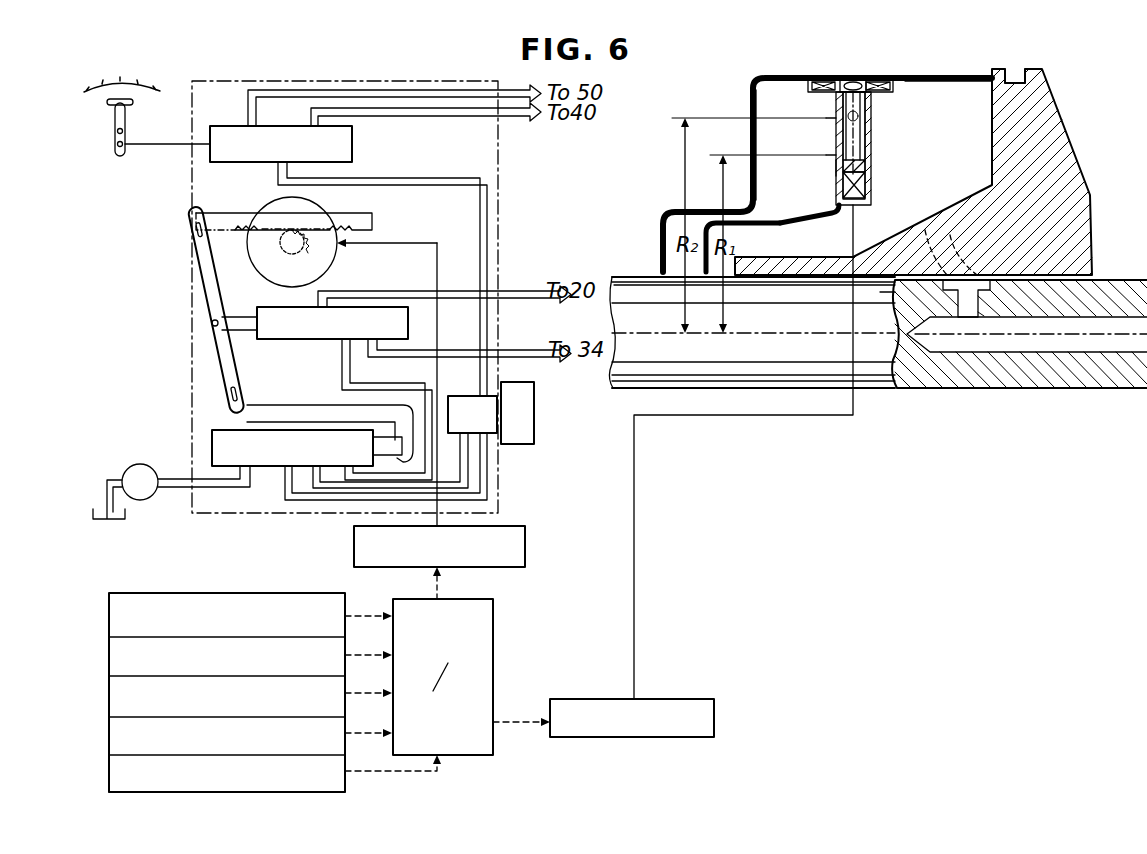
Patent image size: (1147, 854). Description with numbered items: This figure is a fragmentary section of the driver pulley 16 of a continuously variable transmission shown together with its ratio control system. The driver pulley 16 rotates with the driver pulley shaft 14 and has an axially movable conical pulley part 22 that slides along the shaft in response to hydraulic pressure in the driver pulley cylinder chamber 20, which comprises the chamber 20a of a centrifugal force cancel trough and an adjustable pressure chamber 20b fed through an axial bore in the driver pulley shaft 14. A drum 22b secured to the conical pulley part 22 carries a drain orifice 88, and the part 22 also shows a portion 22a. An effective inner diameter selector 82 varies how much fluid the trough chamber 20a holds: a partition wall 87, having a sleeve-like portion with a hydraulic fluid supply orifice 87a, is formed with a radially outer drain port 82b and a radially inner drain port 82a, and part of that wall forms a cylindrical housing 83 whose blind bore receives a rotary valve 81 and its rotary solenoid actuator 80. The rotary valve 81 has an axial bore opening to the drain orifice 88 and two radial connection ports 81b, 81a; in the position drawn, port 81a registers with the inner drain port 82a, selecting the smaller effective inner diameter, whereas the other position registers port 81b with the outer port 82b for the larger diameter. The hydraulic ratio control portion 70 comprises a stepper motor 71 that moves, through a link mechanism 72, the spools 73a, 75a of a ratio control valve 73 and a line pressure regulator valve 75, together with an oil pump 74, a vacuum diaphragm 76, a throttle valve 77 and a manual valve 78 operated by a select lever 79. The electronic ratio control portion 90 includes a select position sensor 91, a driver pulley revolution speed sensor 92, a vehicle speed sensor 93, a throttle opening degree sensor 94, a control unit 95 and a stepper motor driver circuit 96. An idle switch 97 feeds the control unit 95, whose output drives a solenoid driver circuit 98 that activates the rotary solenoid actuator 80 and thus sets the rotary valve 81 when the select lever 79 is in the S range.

The driver pulley shaft 14 is at (1120, 279).
The driver pulley 16 is at (927, 73).
The driver pulley cylinder chamber 20 is at (971, 159).
The hydraulic fluid chamber of centrifugal force cancel trough 20a is at (768, 100).
The adjustable pressure chamber 20b is at (950, 92).
The axially movable conical pulley part 22 is at (1074, 133).
The notch of bracket 22a is at (1020, 70).
The drum 22b is at (805, 76).
The hydraulic ratio control portion 70 is at (405, 80).
The stepper motor 71 is at (324, 213).
The link mechanism 72 is at (190, 297).
The ratio control valve 73 is at (283, 340).
The spool of ratio control valve 73a is at (245, 316).
The oil pump 74 is at (141, 466).
The line pressure regulator valve 75 is at (272, 469).
The spool of line pressure regulator valve 75a is at (380, 438).
The vacuum diaphragm 76 is at (535, 410).
The throttle valve 77 is at (462, 395).
The manual valve 78 is at (353, 143).
The select lever 79 is at (115, 124).
The rotary solenoid actuator 80 is at (872, 186).
The rotary valve 81 is at (873, 105).
The radial connection port 81a is at (868, 166).
The radial connection port 81b is at (873, 121).
The effective inner diameter selector 82 is at (834, 169).
The radially inner drain port 82a is at (838, 161).
The radially outer drain port 82b is at (838, 122).
The cylindrical housing 83 is at (869, 146).
The partition wall 87 is at (812, 210).
The hydraulic fluid supply orifice 87a is at (831, 223).
The drain orifice 88 is at (857, 78).
The electronic ratio control portion 90 is at (388, 602).
The select position sensor 91 is at (108, 618).
The driver pulley revolution speed sensor 92 is at (108, 663).
The vehicle speed sensor 93 is at (108, 703).
The throttle opening degree sensor 94 is at (108, 741).
The control unit 95 is at (497, 633).
The stepper motor driver circuit 96 is at (527, 547).
The idle switch 97 is at (108, 778).
The solenoid driver circuit 98 is at (672, 699).